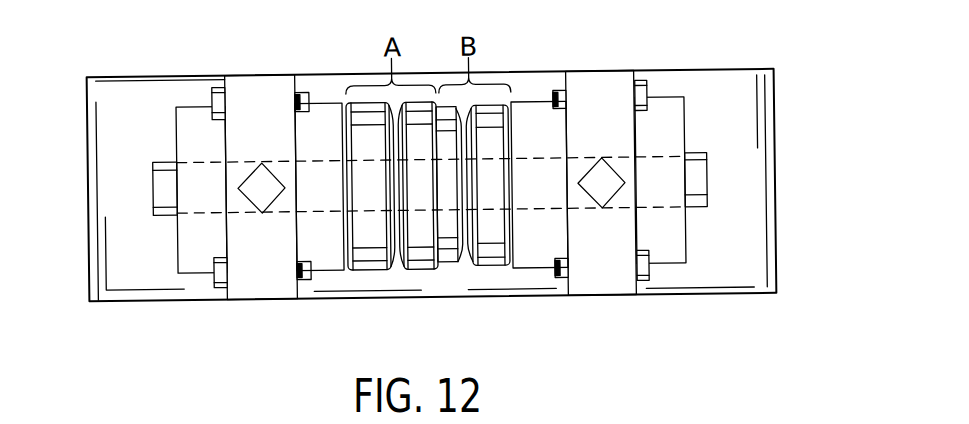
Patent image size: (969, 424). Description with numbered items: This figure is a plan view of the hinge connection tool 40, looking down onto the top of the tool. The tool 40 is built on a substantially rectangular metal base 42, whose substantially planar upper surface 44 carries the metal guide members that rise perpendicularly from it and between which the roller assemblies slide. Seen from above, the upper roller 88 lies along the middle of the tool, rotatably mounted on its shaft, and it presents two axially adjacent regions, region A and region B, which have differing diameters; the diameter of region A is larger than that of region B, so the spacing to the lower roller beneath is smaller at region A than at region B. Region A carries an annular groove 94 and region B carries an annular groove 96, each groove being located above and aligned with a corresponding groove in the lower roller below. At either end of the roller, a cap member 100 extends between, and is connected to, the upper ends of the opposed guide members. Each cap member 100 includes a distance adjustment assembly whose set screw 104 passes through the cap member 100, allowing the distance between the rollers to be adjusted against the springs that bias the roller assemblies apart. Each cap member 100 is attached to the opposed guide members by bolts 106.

The hinge connection tool 40 is at (78, 67).
The base 42 is at (780, 112).
The upper surface 44 is at (108, 168).
The upper roller 88 is at (490, 126).
The annular groove 94 is at (397, 256).
The annular groove 96 is at (465, 261).
The cap member 100 is at (265, 88).
The set screw 104 is at (250, 192).
The bolts 106 is at (648, 88).